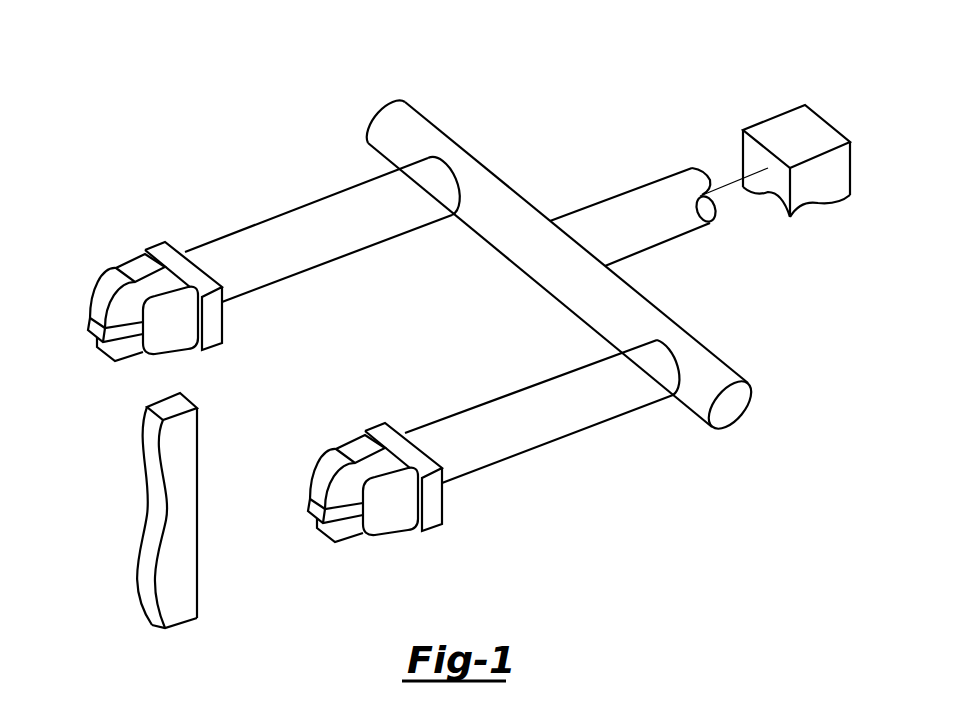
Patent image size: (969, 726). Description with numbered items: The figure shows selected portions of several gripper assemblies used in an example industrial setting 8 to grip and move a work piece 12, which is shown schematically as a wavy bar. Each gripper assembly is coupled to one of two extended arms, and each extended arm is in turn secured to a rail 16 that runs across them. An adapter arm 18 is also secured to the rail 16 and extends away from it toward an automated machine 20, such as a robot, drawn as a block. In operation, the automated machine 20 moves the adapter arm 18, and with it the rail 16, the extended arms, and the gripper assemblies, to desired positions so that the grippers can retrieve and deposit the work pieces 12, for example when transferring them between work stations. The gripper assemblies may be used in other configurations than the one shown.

The industrial setting 8 is at (563, 83).
The work piece 12 is at (197, 452).
The rail 16 is at (697, 340).
The adapter arm 18 is at (622, 194).
The automated machine 20 is at (807, 125).